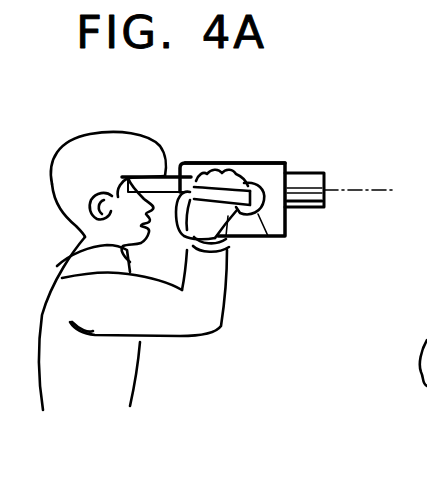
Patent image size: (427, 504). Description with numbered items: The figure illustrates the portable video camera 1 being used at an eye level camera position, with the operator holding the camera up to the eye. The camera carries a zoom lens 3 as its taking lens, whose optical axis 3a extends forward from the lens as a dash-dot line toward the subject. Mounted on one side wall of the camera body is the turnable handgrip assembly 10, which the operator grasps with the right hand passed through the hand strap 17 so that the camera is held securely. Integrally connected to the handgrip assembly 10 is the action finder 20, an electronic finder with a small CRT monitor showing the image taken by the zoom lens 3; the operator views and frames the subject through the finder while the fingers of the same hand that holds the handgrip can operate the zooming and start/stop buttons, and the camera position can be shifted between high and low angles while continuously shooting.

The portable video camera 1 is at (249, 158).
The zoom lens 3 is at (315, 172).
The optical axis 3a is at (375, 193).
The handgrip assembly 10 is at (260, 217).
The hand strap 17 is at (233, 236).
The action finder 20 is at (172, 177).